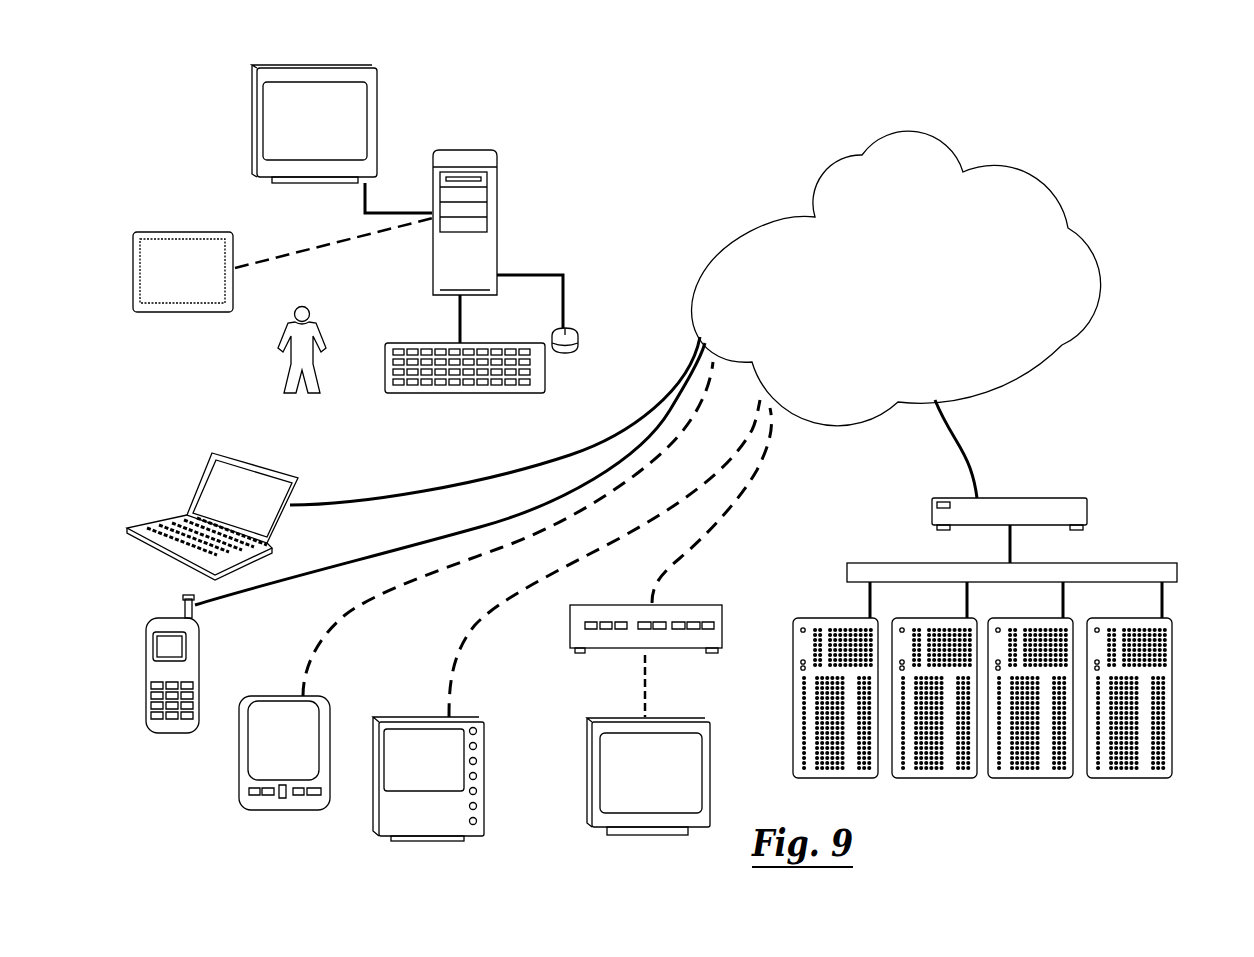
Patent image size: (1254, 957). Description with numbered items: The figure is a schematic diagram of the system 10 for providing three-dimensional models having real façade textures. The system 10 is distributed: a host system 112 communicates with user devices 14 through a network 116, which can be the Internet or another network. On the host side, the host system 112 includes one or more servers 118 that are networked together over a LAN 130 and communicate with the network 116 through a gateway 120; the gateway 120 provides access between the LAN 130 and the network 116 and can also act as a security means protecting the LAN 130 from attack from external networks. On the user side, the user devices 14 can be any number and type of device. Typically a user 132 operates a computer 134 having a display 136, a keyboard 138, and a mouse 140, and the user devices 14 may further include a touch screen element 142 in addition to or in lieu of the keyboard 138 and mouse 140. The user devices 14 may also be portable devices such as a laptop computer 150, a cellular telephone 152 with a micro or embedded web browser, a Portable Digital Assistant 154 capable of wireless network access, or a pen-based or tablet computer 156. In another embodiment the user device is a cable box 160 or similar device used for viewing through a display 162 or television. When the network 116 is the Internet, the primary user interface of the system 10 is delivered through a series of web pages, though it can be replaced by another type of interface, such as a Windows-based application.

The system 10 is at (1113, 165).
The user devices 14 is at (185, 792).
The host system 112 is at (1062, 450).
The network 116 is at (918, 128).
The servers 118 is at (1173, 633).
The gateway 120 is at (1087, 512).
The LAN 130 is at (1143, 563).
The user 132 is at (283, 365).
The computer 134 is at (473, 150).
The display 136 is at (252, 122).
The keyboard 138 is at (448, 395).
The mouse 140 is at (580, 343).
The touch screen element 142 is at (198, 232).
The laptop computer 150 is at (188, 491).
The cellular telephone 152 is at (200, 678).
The Portable Digital Assistant 154 is at (291, 812).
The tablet computer 156 is at (484, 798).
The cable box 160 is at (570, 628).
The display 162 is at (712, 762).